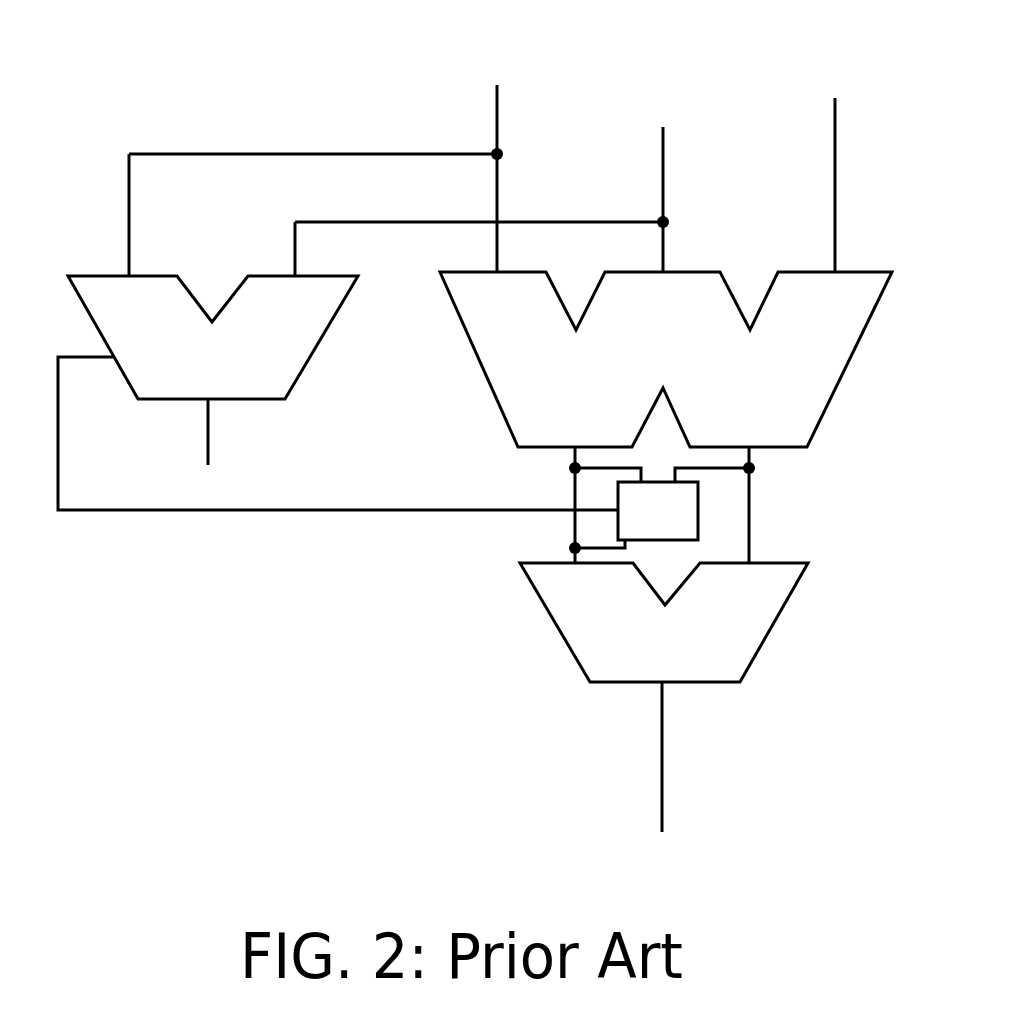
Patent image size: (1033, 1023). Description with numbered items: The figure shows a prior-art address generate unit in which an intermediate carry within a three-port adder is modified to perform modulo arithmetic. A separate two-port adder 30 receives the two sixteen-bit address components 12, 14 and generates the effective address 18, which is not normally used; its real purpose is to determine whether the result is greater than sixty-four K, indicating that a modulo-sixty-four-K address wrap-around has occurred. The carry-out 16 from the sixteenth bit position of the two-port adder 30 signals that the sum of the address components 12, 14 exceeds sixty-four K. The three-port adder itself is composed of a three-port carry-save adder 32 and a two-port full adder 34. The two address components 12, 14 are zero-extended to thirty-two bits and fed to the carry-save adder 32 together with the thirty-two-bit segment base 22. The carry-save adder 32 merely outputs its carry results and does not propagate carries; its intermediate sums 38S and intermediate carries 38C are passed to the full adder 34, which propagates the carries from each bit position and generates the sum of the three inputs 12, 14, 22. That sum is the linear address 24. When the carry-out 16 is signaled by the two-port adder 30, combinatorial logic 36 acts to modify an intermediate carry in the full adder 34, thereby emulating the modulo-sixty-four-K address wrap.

The address component 12 is at (497, 133).
The address component 14 is at (663, 193).
The segment base 22 is at (835, 173).
The 2-port adder 30 is at (317, 350).
The carry-save adder 32 is at (820, 428).
The full adder 34 is at (772, 634).
The combinatorial logic 36 is at (698, 535).
The intermediate carries 38C is at (575, 497).
The intermediate sums 38S is at (749, 540).
The carry-out 16 is at (170, 512).
The effective address 18 is at (210, 415).
The linear address 24 is at (662, 770).